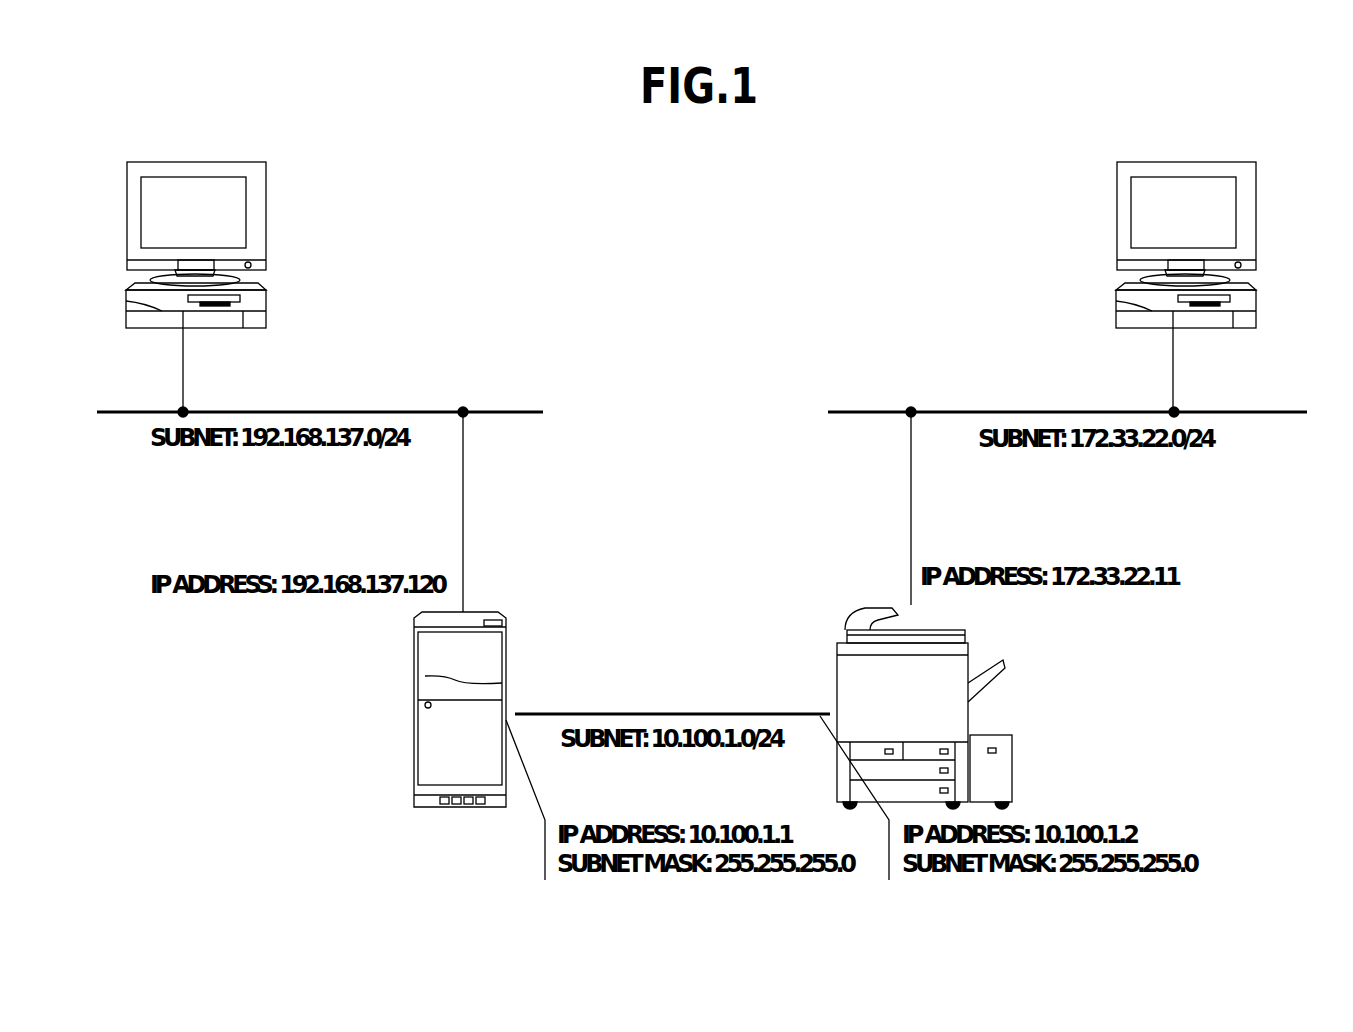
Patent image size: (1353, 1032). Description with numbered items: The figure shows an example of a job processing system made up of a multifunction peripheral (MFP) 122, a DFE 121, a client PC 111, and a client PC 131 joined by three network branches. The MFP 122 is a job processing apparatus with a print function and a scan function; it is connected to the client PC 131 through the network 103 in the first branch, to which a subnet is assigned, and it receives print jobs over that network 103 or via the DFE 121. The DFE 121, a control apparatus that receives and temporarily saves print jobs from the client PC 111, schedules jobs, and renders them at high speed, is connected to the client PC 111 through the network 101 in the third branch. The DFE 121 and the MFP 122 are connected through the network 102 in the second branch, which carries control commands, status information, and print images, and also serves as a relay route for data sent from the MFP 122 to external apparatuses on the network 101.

The client PC 111 is at (203, 162).
The client PC 131 is at (1194, 162).
The network 101 is at (353, 412).
The network 102 is at (572, 714).
The network 103 is at (1249, 412).
The DFE 121 is at (478, 612).
The multifunction peripheral (MFP) 122 is at (968, 660).